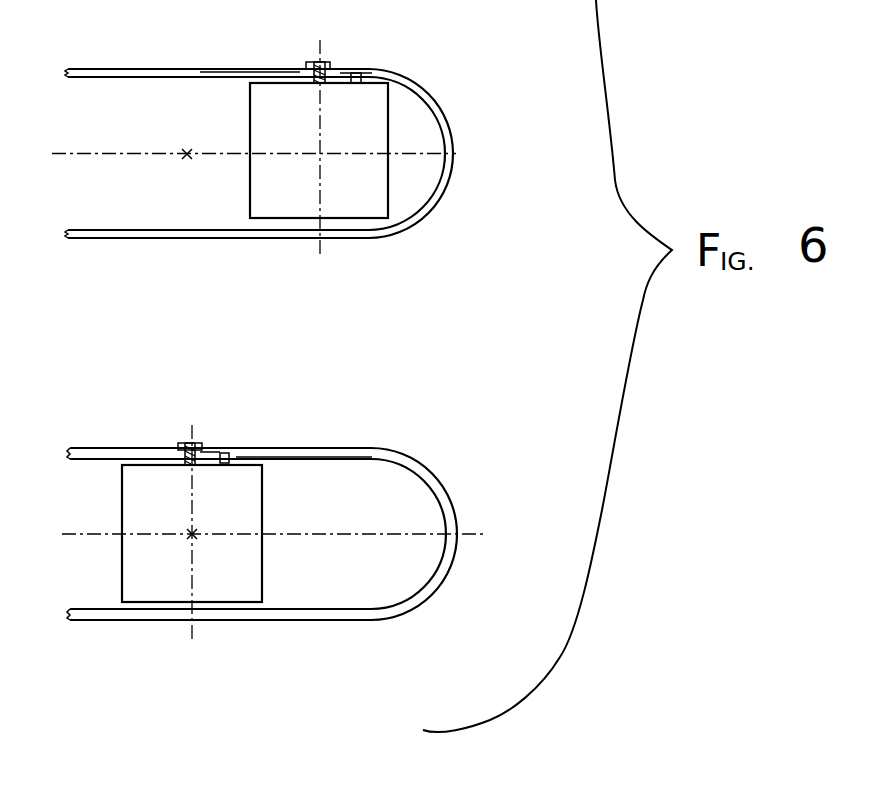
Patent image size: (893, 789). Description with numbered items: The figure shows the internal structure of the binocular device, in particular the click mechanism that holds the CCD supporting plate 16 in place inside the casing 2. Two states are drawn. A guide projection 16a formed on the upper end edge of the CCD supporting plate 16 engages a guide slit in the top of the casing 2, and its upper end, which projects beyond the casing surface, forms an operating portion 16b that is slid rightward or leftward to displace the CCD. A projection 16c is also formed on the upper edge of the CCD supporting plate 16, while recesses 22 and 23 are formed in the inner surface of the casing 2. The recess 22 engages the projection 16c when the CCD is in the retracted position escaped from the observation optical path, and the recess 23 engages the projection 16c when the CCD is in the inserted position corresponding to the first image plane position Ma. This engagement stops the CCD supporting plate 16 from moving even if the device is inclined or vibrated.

The casing 2 is at (431, 94).
The CCD supporting plate 16 is at (358, 219).
The guide projection 16a is at (312, 70).
The operating portion 16b is at (322, 64).
The projection 16c is at (372, 72).
The recess 22 is at (351, 72).
The recess 23 is at (221, 70).
The first image plane position Ma is at (186, 157).